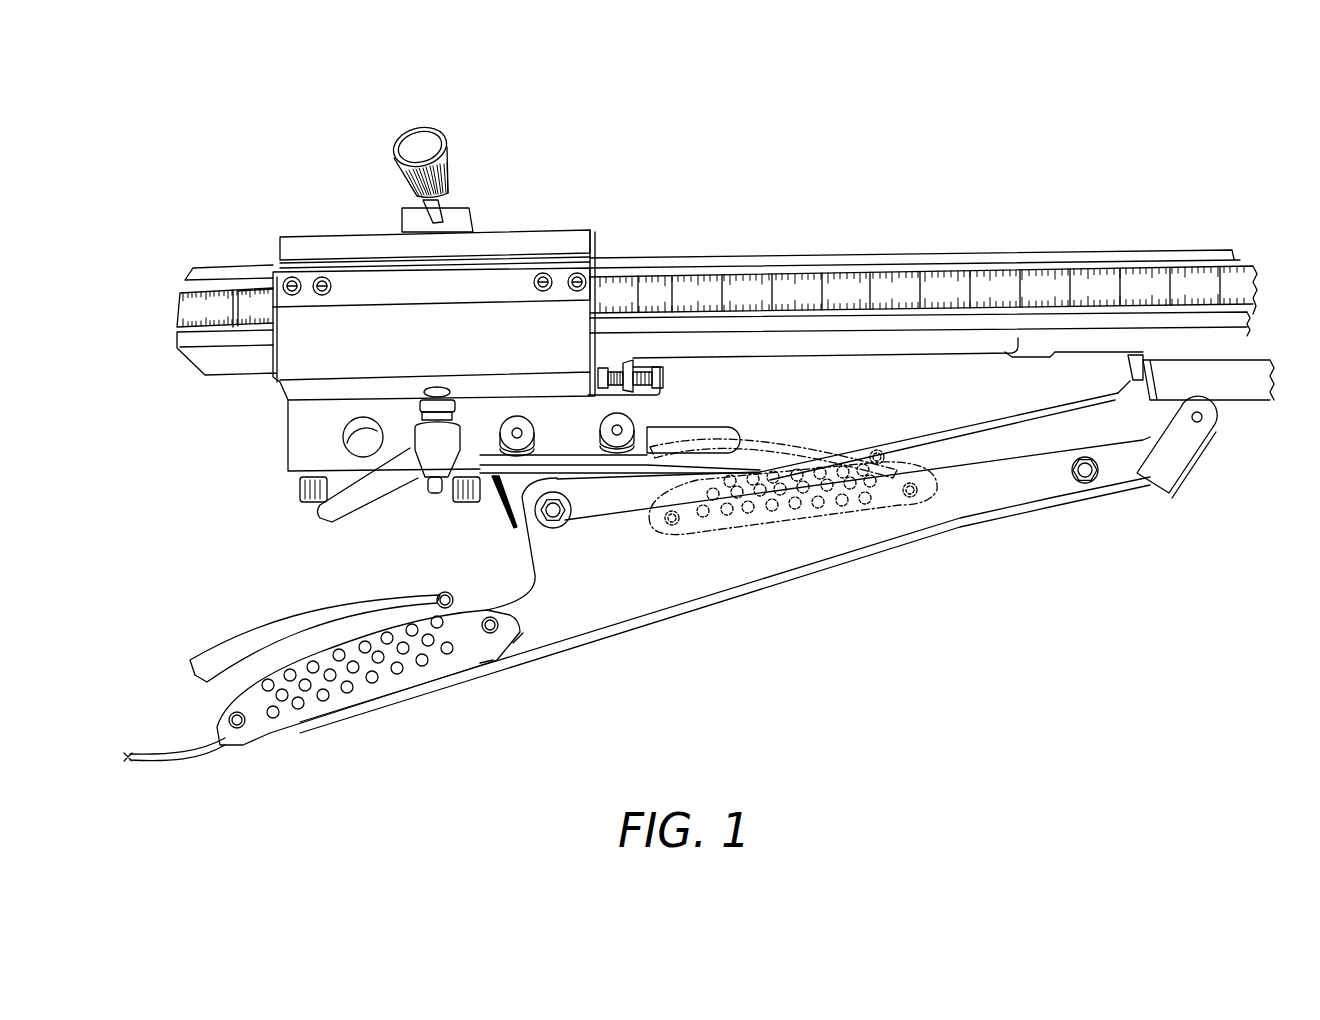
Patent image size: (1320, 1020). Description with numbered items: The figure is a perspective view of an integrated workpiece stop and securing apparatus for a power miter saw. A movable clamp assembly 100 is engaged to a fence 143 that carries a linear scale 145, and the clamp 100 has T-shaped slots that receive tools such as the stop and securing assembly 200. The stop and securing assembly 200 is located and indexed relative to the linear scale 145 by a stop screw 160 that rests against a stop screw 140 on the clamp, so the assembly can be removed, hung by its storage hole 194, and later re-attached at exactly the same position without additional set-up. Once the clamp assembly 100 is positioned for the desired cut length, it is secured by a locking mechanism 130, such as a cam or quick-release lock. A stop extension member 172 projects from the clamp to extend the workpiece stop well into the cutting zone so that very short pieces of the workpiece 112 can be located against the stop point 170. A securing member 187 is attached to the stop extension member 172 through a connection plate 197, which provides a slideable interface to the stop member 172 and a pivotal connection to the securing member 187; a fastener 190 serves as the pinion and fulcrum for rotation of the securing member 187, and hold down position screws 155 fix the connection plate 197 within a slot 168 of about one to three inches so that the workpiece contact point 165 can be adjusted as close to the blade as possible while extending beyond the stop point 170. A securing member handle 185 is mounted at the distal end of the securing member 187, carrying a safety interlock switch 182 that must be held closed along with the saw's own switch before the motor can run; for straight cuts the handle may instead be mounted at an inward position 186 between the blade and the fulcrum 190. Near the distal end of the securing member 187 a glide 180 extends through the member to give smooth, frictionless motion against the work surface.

The movable clamp assembly 100 is at (517, 220).
The workpiece 112 is at (1190, 372).
The locking mechanism 130 is at (360, 505).
The stop screw 140 is at (612, 370).
The fence 143 is at (793, 258).
The linear scale 145 is at (230, 272).
The hold down position screws 155 is at (600, 420).
The stop screw / accessory position screw 160 is at (664, 375).
The workpiece contact point 165 is at (1215, 427).
The slot 168 is at (713, 447).
The stop point 170 is at (1140, 355).
The stop extension member 172 is at (850, 375).
The glide 180 is at (1090, 485).
The safety interlock switch 182 is at (247, 627).
The securing member handle 185 is at (390, 677).
The inward position 186 is at (750, 558).
The securing member 187 is at (605, 610).
The fastener 190 is at (545, 523).
The storage hole 194 is at (367, 437).
The connection plate 197 is at (510, 490).
The stop and securing assembly 200 is at (928, 573).